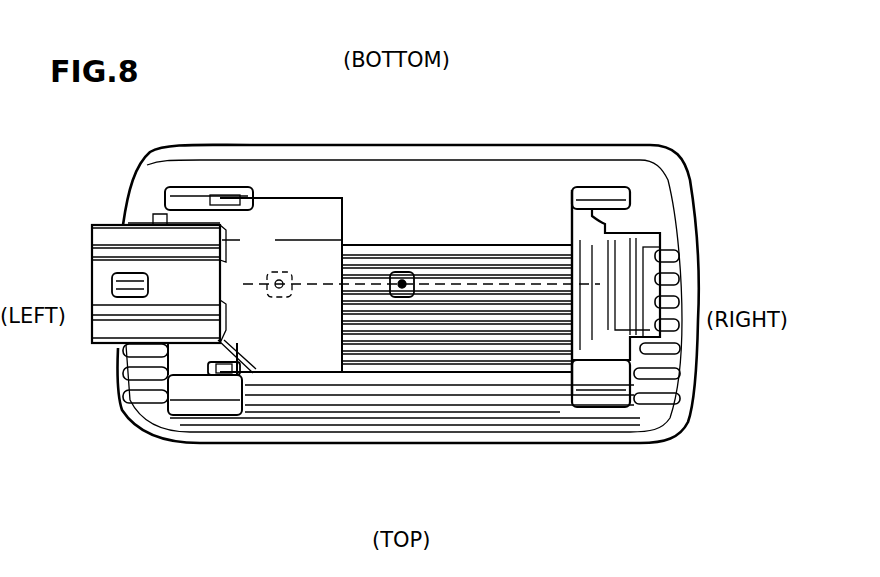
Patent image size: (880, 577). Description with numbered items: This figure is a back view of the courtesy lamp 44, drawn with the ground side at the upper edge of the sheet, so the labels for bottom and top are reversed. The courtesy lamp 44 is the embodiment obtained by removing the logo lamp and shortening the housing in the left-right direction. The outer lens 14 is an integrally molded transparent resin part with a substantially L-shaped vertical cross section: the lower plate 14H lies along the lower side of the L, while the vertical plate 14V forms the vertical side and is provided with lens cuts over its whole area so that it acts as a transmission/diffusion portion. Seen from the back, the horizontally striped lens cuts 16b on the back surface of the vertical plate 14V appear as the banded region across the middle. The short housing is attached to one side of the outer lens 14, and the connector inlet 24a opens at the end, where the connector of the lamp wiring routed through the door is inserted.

The courtesy lamp 44 is at (592, 130).
The outer lens 14 is at (690, 225).
The lower plate 14H is at (467, 212).
The vertical plate 14V is at (493, 375).
The lens cuts 16b is at (441, 408).
The connector inlet 24a is at (112, 285).